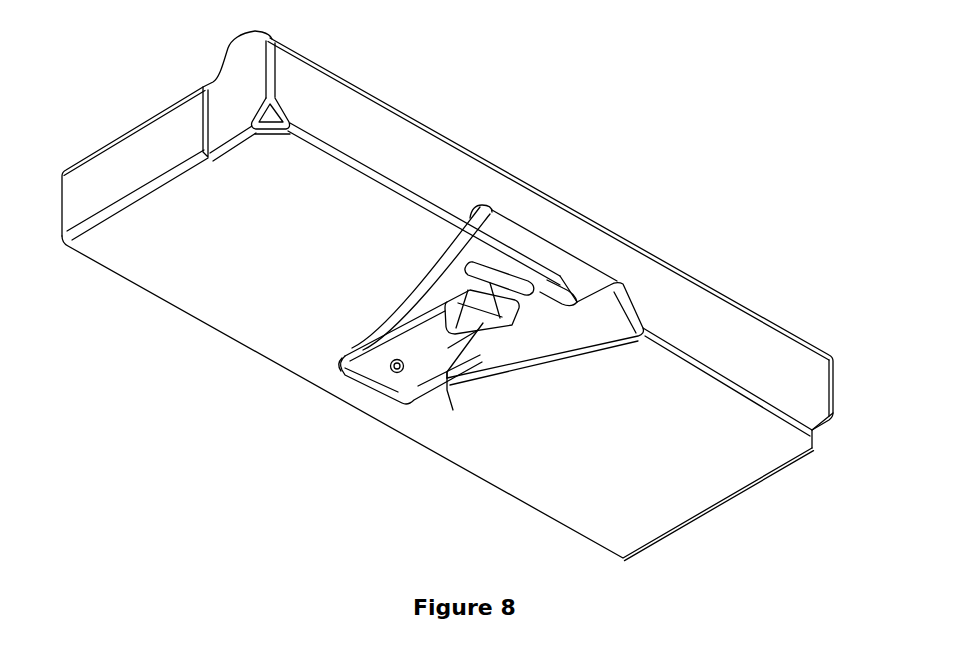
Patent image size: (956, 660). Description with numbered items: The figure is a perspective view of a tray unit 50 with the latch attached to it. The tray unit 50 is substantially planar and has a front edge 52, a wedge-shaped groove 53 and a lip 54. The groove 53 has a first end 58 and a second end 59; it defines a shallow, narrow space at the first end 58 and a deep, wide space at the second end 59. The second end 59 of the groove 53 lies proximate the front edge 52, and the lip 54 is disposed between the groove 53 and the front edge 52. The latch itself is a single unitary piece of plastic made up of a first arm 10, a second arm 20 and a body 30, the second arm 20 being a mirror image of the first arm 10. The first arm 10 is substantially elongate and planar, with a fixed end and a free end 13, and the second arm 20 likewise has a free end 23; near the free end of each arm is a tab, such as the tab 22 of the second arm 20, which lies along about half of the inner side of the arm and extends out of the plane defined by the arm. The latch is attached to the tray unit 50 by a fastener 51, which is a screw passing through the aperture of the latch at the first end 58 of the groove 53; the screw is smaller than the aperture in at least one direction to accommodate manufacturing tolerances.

The first arm 10 is at (447, 350).
The free end 13 is at (563, 228).
The second arm 20 is at (390, 381).
The tab 22 is at (515, 272).
The free end 23 is at (492, 307).
The body 30 is at (375, 357).
The tray unit 50 is at (643, 518).
The fastener 51 is at (417, 322).
The front edge 52 is at (665, 290).
The wedge-shaped groove 53 is at (445, 240).
The lip 54 is at (555, 263).
The first end 58 is at (388, 372).
The second end 59 is at (536, 262).